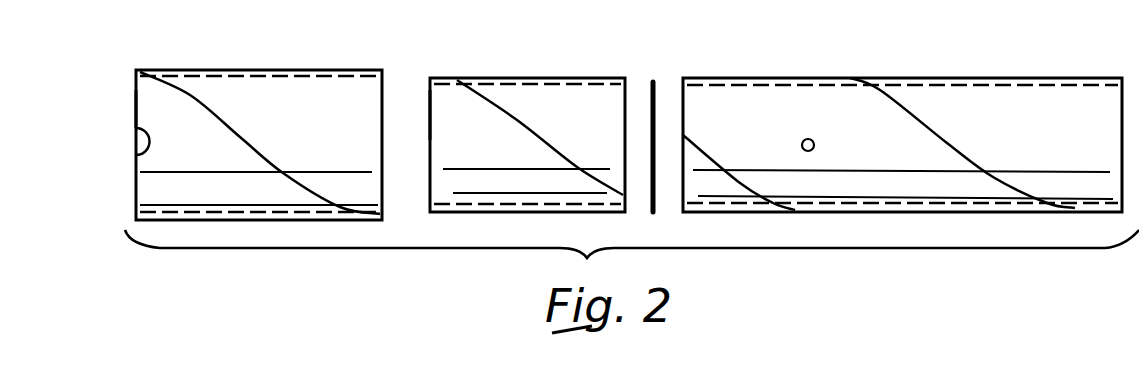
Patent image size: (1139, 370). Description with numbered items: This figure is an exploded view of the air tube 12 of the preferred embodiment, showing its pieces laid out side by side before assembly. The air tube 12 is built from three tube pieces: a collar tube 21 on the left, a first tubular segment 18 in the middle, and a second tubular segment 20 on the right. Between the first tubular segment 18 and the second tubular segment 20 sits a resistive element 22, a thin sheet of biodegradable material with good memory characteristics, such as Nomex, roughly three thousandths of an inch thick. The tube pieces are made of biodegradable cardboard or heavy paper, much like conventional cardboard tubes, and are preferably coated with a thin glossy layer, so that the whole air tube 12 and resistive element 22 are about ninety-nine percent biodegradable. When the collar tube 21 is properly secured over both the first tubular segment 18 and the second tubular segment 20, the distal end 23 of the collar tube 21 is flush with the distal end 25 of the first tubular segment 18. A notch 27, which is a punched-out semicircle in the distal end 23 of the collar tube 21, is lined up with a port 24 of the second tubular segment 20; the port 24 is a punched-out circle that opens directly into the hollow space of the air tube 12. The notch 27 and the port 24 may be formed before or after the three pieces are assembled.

The air tube 12 is at (233, 280).
The first tubular segment 18 is at (558, 77).
The second tubular segment 20 is at (773, 78).
The collar tube 21 is at (306, 69).
The resistive element 22 is at (658, 100).
The distal end of the collar tube 23 is at (136, 110).
The port 24 is at (814, 144).
The distal end of the first tubular segment 25 is at (428, 103).
The notch 27 is at (140, 152).